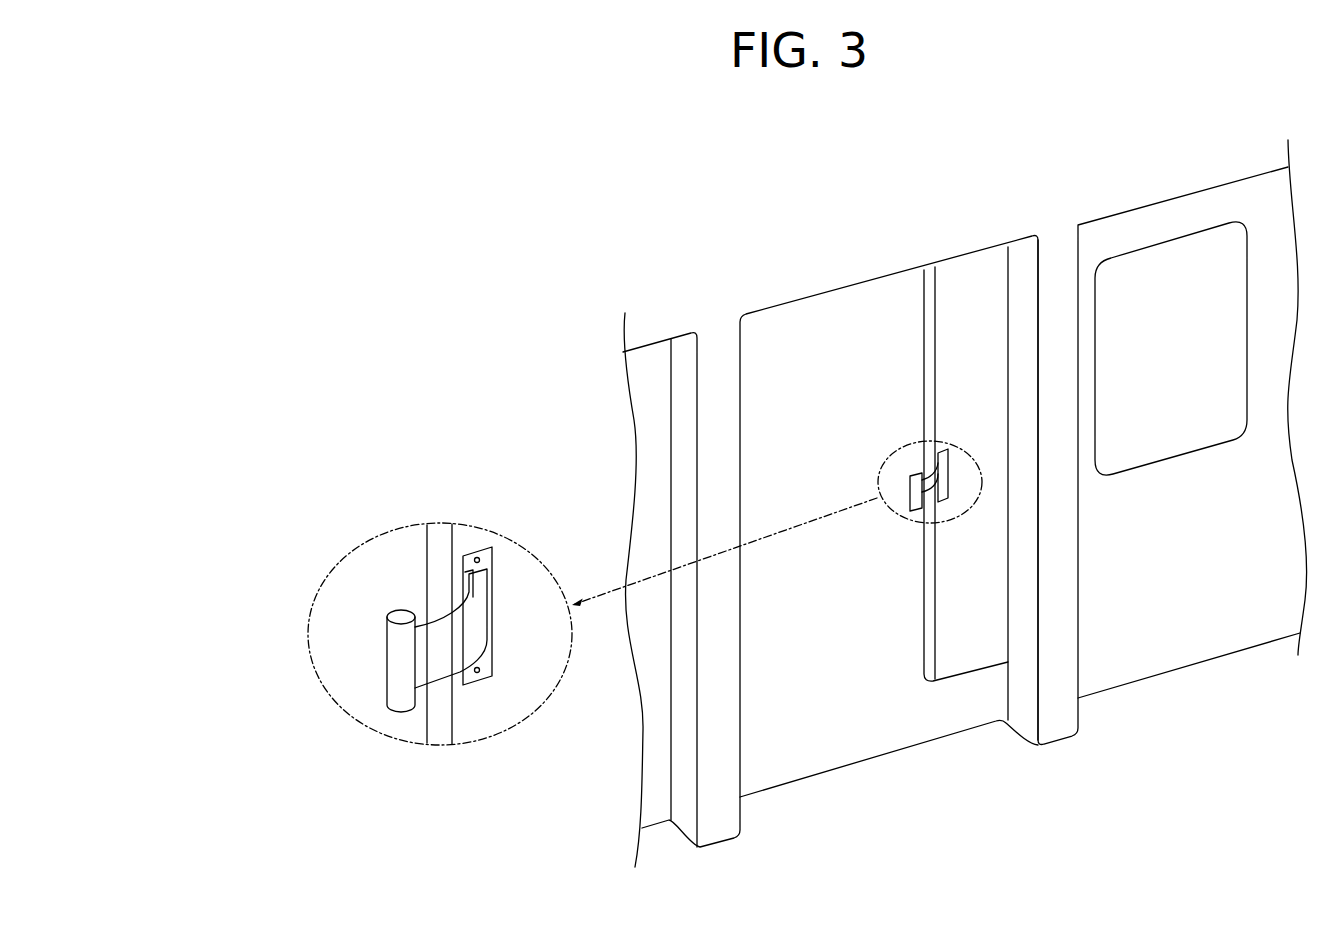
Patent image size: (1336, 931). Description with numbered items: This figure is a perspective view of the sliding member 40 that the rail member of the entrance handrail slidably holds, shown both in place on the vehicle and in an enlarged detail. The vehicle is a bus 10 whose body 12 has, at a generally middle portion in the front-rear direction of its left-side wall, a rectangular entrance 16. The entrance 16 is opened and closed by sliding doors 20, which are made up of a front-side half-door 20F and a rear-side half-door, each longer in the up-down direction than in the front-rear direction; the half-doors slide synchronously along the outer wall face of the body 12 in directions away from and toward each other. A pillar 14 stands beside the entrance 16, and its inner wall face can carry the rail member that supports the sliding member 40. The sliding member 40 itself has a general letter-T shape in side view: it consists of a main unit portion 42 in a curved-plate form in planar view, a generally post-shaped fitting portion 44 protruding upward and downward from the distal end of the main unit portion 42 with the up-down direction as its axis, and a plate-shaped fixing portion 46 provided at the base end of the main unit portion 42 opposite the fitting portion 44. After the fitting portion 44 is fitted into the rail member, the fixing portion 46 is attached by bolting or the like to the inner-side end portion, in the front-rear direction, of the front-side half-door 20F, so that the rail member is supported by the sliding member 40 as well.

The bus 10 is at (1167, 170).
The body 12 is at (1208, 668).
The pillar 14 is at (1062, 553).
The entrance 16 is at (1007, 681).
The front-side half-door 20F is at (967, 295).
The sliding doors 20 is at (957, 442).
The sliding member 40 is at (382, 604).
The main unit portion 42 is at (443, 652).
The fitting portion 44 is at (398, 658).
The fixing portion 46 is at (485, 563).